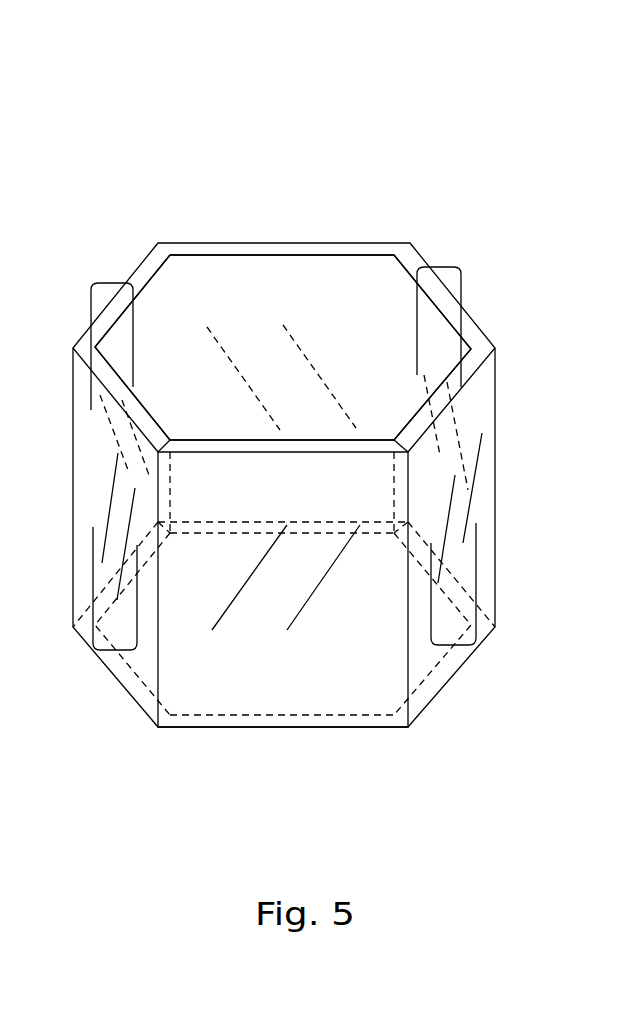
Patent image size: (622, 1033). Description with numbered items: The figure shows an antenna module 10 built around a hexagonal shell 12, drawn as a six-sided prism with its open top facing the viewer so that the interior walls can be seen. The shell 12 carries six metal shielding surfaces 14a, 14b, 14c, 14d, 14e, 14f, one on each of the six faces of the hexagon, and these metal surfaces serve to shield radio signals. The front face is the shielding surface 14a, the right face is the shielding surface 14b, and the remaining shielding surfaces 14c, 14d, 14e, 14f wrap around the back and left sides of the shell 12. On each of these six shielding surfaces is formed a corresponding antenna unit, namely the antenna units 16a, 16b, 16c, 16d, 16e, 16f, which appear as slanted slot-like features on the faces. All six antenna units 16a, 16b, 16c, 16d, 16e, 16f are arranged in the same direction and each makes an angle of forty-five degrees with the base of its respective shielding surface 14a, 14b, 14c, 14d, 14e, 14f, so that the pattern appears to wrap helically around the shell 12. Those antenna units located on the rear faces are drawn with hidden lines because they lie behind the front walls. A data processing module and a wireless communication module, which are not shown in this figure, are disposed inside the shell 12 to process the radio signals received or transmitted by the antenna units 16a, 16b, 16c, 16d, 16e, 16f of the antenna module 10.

The antenna module 10 is at (503, 121).
The hexagonal shell 12 is at (262, 243).
The metal shielding surface 14a is at (208, 693).
The metal shielding surface 14b is at (482, 552).
The metal shielding surface 14c is at (403, 278).
The metal shielding surface 14d is at (350, 285).
The metal shielding surface 14e is at (160, 290).
The metal shielding surface 14f is at (83, 518).
The antenna unit 16a is at (296, 634).
The antenna unit 16b is at (453, 645).
The antenna unit 16c is at (440, 265).
The antenna unit 16d is at (287, 322).
The antenna unit 16e is at (111, 283).
The antenna unit 16f is at (115, 650).